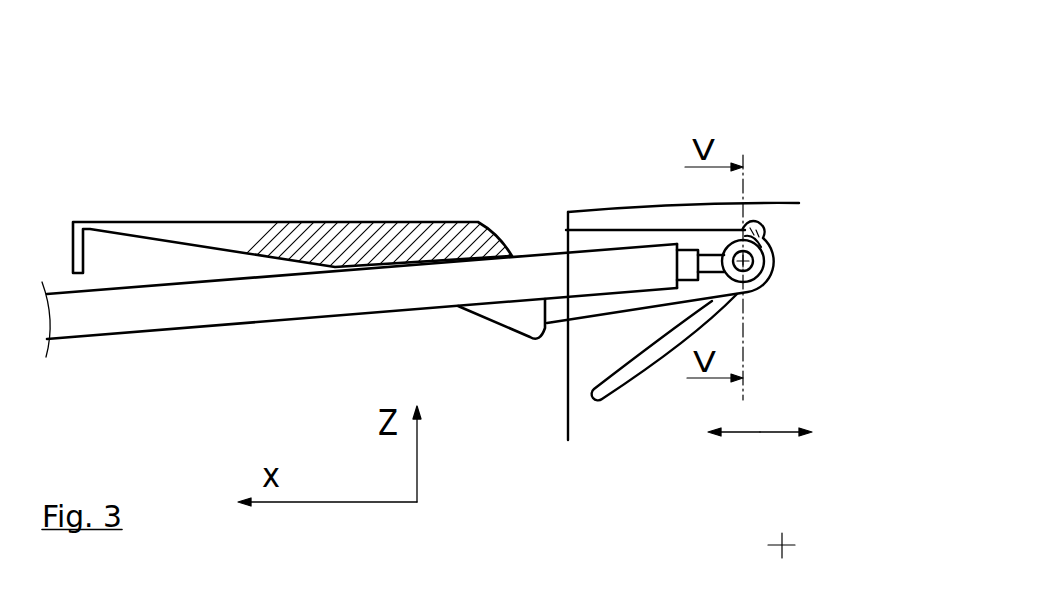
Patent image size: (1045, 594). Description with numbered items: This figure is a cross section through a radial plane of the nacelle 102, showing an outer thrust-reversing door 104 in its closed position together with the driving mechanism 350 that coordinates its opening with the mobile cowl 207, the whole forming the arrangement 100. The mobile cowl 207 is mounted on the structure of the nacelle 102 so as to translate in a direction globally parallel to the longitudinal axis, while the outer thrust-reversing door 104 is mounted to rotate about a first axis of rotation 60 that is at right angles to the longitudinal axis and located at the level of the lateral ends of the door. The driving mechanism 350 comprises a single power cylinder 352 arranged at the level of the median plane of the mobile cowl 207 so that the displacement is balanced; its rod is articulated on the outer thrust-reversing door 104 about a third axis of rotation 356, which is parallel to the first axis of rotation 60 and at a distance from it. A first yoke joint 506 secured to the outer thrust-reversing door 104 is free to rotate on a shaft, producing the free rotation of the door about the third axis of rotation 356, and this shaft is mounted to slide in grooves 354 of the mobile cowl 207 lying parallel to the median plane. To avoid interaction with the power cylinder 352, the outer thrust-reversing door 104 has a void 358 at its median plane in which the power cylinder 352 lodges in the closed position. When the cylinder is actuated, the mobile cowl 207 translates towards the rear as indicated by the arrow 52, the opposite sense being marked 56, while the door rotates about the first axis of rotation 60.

The air guiding arrangement 100 is at (692, 108).
The nacelle 102 is at (517, 157).
The outer thrust-reversing door 104 is at (205, 227).
The mobile cowl 207 is at (763, 212).
The driving mechanism 350 is at (620, 453).
The power cylinder 352 is at (137, 303).
The groove 354 is at (597, 383).
The third axis of rotation 356 is at (747, 263).
The void 358 is at (503, 312).
The first yoke joint 506 is at (767, 242).
The retraction direction 56 is at (727, 452).
The arrow 52 is at (786, 455).
The first axis of rotation 60 is at (782, 545).